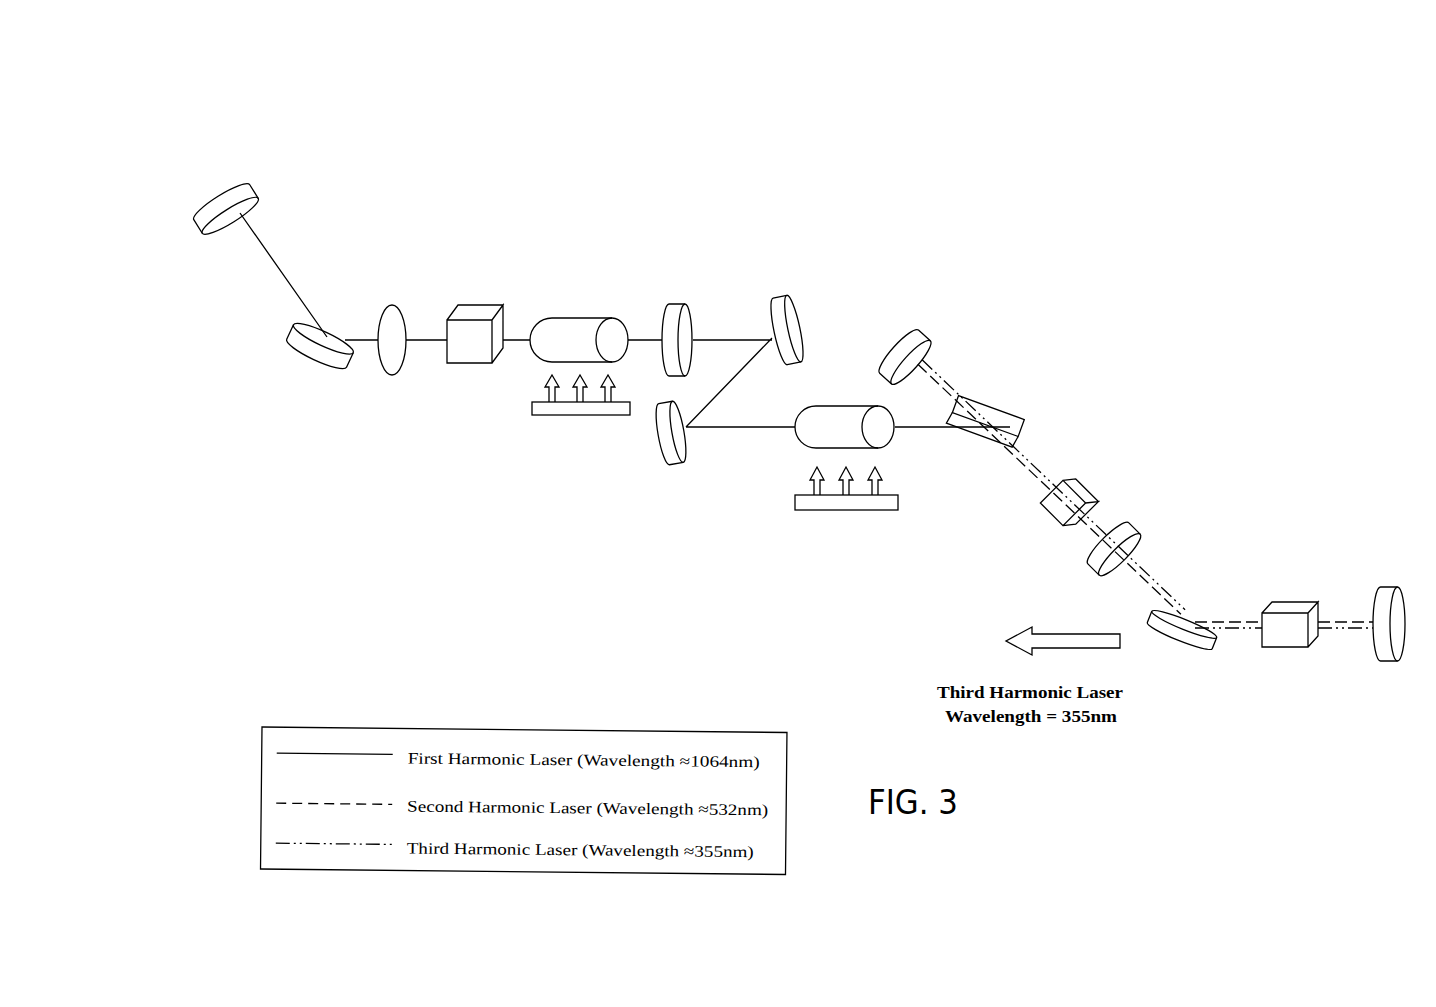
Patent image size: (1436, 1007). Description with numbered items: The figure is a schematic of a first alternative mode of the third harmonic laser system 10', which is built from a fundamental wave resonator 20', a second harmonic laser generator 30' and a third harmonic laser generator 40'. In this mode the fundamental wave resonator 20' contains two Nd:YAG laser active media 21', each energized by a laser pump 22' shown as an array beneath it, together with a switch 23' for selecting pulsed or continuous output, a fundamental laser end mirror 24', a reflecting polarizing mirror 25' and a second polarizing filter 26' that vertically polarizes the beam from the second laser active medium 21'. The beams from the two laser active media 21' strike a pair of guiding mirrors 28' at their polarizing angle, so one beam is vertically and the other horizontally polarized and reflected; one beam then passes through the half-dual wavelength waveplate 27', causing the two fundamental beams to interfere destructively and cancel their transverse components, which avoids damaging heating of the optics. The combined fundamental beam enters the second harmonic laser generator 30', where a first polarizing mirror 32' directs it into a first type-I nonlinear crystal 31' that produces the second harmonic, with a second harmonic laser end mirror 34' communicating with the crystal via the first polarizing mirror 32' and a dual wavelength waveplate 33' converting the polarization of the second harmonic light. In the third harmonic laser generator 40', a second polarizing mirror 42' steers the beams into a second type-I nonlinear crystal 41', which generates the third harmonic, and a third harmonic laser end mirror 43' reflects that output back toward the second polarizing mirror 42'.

The third harmonic laser system 10' is at (349, 571).
The fundamental wave resonator 20' is at (563, 76).
The Nd:YAG laser active medium 21' is at (673, 497).
The laser pump 22' is at (715, 491).
The switch 23' is at (516, 273).
The fundamental laser end mirror 24' is at (240, 153).
The reflecting polarizing mirror 25' is at (287, 390).
The second polarizing filter 26' is at (412, 282).
The half-dual wavelength waveplate 27' is at (702, 274).
The guiding mirrors 28' is at (748, 366).
The second harmonic laser generator 30' is at (1174, 415).
The first type-I nonlinear crystal 31' is at (1044, 543).
The first polarizing mirror 32' is at (1068, 433).
The dual wavelength waveplate 33' is at (1182, 528).
The second harmonic laser end mirror 34' is at (884, 288).
The third harmonic laser generator 40' is at (1272, 756).
The second type-I nonlinear crystal 41' is at (1305, 550).
The second polarizing mirror 42' is at (1188, 697).
The third harmonic laser end mirror 43' is at (1401, 581).